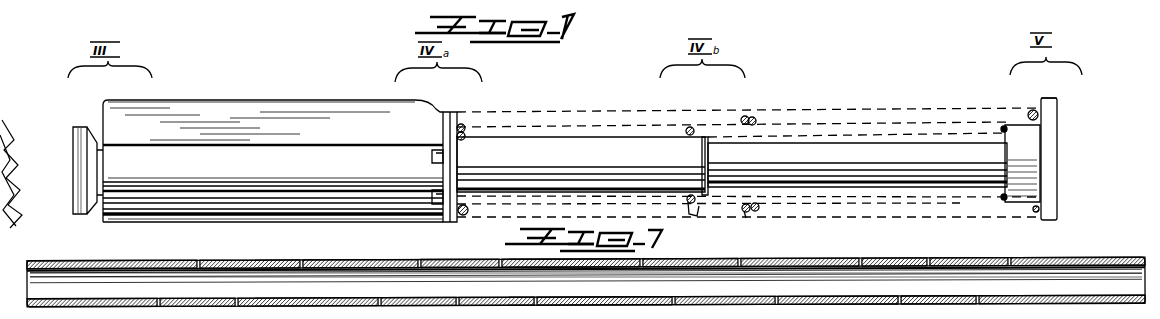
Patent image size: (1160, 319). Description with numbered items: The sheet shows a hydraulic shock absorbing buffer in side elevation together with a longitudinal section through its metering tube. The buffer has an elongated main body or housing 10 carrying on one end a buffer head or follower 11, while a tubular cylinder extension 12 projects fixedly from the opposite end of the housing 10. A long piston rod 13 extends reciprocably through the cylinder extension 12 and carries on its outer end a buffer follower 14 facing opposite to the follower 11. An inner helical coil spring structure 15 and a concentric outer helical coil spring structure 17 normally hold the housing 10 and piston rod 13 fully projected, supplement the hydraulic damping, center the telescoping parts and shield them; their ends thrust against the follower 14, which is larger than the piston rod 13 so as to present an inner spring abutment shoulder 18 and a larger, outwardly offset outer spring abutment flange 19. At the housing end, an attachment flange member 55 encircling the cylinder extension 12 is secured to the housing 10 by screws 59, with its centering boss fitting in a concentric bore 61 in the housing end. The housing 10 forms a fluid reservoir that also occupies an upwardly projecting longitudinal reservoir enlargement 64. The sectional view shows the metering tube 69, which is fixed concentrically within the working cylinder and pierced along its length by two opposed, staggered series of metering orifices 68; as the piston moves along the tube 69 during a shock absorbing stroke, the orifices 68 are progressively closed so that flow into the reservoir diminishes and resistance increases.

In FIG. 1, the main body or housing 10 is at (256, 158).
In FIG. 1, the buffer head or follower 11 is at (84, 130).
In FIG. 1, the tubular cylinder extension 12 is at (603, 152).
In FIG. 1, the piston rod 13 is at (908, 150).
In FIG. 1, the buffer follower 14 is at (1058, 160).
In FIG. 1, the inner helical coil spring structure 15 is at (694, 214).
In FIG. 1, the outer helical coil spring structure 17 is at (748, 214).
In FIG. 1, the inner spring abutment shoulder 18 is at (1005, 154).
In FIG. 1, the outer spring abutment flange 19 is at (1049, 100).
In FIG. 1, the attachment flange member 55 is at (450, 115).
In FIG. 1, the screws 59 is at (458, 187).
In FIG. 1, the concentric bore 61 is at (344, 214).
In FIG. 1, the longitudinal reservoir enlargement 64 is at (300, 104).
In FIG. 7, the metering orifices 68 is at (302, 271).
In FIG. 7, the metering tube 69 is at (806, 260).